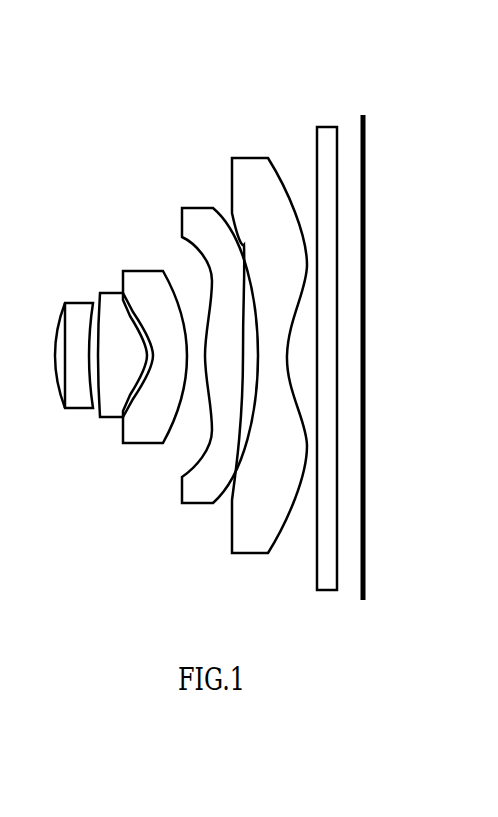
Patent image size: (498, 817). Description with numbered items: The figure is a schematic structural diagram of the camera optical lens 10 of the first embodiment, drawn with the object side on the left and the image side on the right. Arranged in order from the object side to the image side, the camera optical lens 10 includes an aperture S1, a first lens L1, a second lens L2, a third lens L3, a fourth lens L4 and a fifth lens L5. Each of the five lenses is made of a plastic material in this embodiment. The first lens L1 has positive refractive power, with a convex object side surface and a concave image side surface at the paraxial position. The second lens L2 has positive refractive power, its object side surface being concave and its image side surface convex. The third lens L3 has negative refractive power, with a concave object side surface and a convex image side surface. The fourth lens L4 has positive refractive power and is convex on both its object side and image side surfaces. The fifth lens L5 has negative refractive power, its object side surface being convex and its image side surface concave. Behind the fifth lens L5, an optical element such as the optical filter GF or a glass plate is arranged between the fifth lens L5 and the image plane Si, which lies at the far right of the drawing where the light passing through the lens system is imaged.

The camera optical lens 10 is at (240, 37).
The aperture S1 is at (57, 341).
The first lens L1 is at (74, 345).
The second lens L2 is at (125, 343).
The third lens L3 is at (155, 344).
The fourth lens L4 is at (220, 343).
The fifth lens L5 is at (269, 343).
The optical filter GF is at (324, 344).
The image plane Si is at (359, 344).